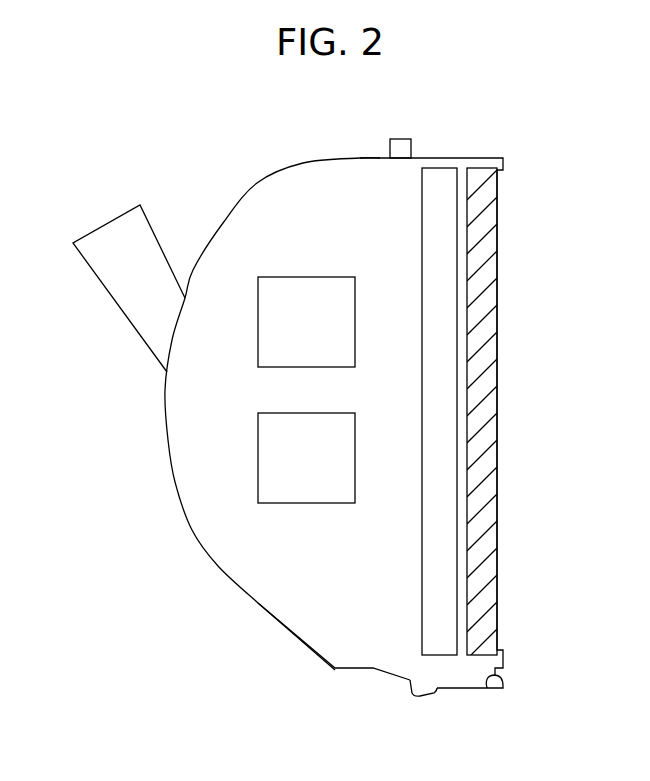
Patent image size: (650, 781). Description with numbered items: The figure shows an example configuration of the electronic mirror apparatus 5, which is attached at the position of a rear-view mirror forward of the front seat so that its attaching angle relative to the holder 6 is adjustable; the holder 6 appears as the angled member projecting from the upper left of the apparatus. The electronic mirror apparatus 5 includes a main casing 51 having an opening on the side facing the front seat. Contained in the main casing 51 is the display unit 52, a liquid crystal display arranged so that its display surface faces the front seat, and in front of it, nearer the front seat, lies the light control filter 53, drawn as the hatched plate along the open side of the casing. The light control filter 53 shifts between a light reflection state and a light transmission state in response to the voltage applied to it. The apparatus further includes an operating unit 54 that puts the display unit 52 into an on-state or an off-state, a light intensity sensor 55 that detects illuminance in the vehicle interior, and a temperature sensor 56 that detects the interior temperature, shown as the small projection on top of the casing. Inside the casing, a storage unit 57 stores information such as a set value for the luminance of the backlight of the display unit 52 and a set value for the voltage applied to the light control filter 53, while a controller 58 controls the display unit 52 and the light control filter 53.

The electronic mirror apparatus 5 is at (242, 172).
The holder 6 is at (108, 292).
The main casing 51 is at (258, 603).
The display unit 52 is at (440, 168).
The light control filter 53 is at (497, 268).
The operating unit 54 is at (424, 696).
The light intensity sensor 55 is at (490, 688).
The temperature sensor 56 is at (402, 139).
The storage unit 57 is at (307, 504).
The controller 58 is at (311, 277).